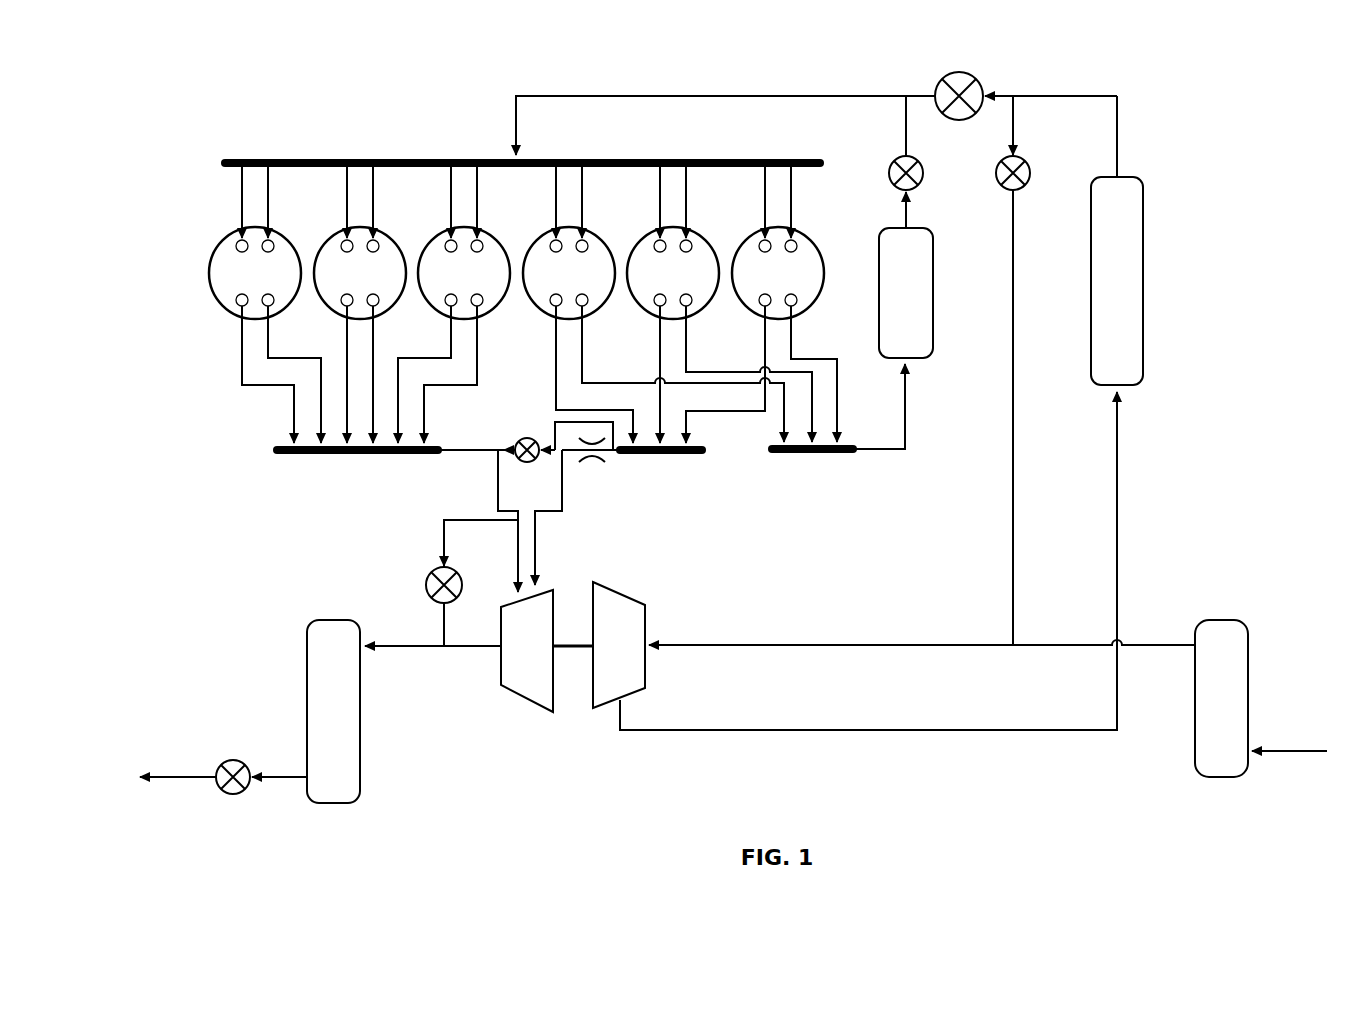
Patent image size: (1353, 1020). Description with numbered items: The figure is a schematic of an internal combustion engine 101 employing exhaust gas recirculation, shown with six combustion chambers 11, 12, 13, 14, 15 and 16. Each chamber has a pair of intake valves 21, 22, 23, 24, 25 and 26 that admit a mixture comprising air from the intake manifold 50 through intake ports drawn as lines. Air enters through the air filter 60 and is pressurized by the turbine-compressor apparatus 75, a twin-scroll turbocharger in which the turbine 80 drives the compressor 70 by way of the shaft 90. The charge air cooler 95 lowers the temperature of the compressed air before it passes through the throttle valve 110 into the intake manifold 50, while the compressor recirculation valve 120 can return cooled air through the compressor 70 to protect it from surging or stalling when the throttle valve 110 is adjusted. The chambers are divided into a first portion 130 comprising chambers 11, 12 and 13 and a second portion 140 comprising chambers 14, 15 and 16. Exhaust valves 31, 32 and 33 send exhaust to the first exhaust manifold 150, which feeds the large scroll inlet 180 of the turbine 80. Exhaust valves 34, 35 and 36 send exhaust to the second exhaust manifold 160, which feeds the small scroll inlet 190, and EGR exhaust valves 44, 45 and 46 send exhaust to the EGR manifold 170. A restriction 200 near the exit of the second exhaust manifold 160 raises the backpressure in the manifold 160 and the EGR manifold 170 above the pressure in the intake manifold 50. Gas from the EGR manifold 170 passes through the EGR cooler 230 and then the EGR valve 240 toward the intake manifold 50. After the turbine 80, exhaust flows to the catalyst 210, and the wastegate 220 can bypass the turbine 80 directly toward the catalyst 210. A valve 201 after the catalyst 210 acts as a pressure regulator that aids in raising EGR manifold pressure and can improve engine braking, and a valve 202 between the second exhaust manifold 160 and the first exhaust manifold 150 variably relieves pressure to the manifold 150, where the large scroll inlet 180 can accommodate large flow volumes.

The internal combustion engine 101 is at (213, 131).
The intake manifold 50 is at (304, 157).
The combustion chamber 11 is at (255, 273).
The combustion chamber 12 is at (360, 273).
The combustion chamber 13 is at (464, 273).
The combustion chamber 14 is at (569, 273).
The combustion chamber 15 is at (673, 273).
The combustion chamber 16 is at (778, 273).
The intake valve 21 is at (255, 238).
The intake valve 22 is at (360, 238).
The intake valve 23 is at (464, 238).
The intake valve 24 is at (569, 238).
The intake valve 25 is at (673, 238).
The intake valve 26 is at (778, 238).
The exhaust valve 31 is at (256, 310).
The exhaust valve 32 is at (361, 310).
The exhaust valve 33 is at (465, 310).
The exhaust valve 34 is at (549, 307).
The exhaust valve 35 is at (653, 307).
The exhaust valve 36 is at (761, 307).
The EGR exhaust valve 44 is at (588, 307).
The EGR exhaust valve 45 is at (692, 307).
The EGR exhaust valve 46 is at (797, 307).
The first portion 130 is at (491, 373).
The second portion 140 is at (544, 349).
The first exhaust manifold 150 is at (308, 460).
The second exhaust manifold 160 is at (648, 460).
The EGR manifold 170 is at (803, 460).
The valve 202 is at (528, 464).
The restriction 200 is at (581, 463).
The large scroll inlet 180 is at (506, 590).
The small scroll inlet 190 is at (558, 592).
The wastegate 220 is at (425, 582).
The turbine-compressor apparatus 75 is at (568, 711).
The turbine 80 is at (527, 651).
The compressor 70 is at (619, 645).
The shaft 90 is at (577, 650).
The catalyst 210 is at (338, 618).
The valve 201 is at (235, 795).
The EGR cooler 230 is at (906, 275).
The EGR valve 240 is at (888, 174).
The throttle valve 110 is at (947, 118).
The compressor recirculation valve 120 is at (998, 182).
The charge air cooler 95 is at (1117, 281).
The air filter 60 is at (1261, 698).